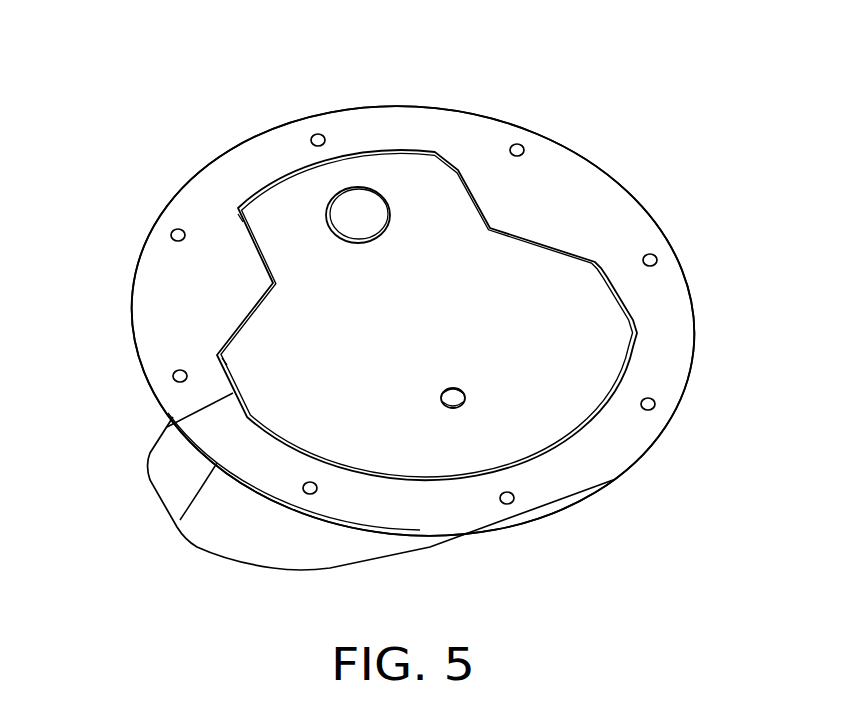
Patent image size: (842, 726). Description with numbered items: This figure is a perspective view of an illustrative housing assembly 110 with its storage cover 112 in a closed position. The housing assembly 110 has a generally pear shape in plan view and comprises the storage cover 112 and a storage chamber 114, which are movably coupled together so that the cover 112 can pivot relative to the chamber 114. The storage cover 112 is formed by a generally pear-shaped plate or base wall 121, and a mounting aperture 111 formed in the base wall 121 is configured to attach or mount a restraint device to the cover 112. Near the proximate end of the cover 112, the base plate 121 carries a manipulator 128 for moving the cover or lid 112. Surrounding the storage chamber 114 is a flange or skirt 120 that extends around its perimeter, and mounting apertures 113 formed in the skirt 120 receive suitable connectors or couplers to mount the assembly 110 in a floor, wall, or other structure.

The housing assembly 110 is at (168, 95).
The mounting aperture 111 is at (460, 386).
The storage cover 112 is at (517, 283).
The mounting apertures 113 is at (316, 133).
The storage chamber 114 is at (215, 538).
The flange or skirt 120 is at (132, 278).
The base wall or plate 121 is at (405, 315).
The manipulator 128 is at (363, 213).